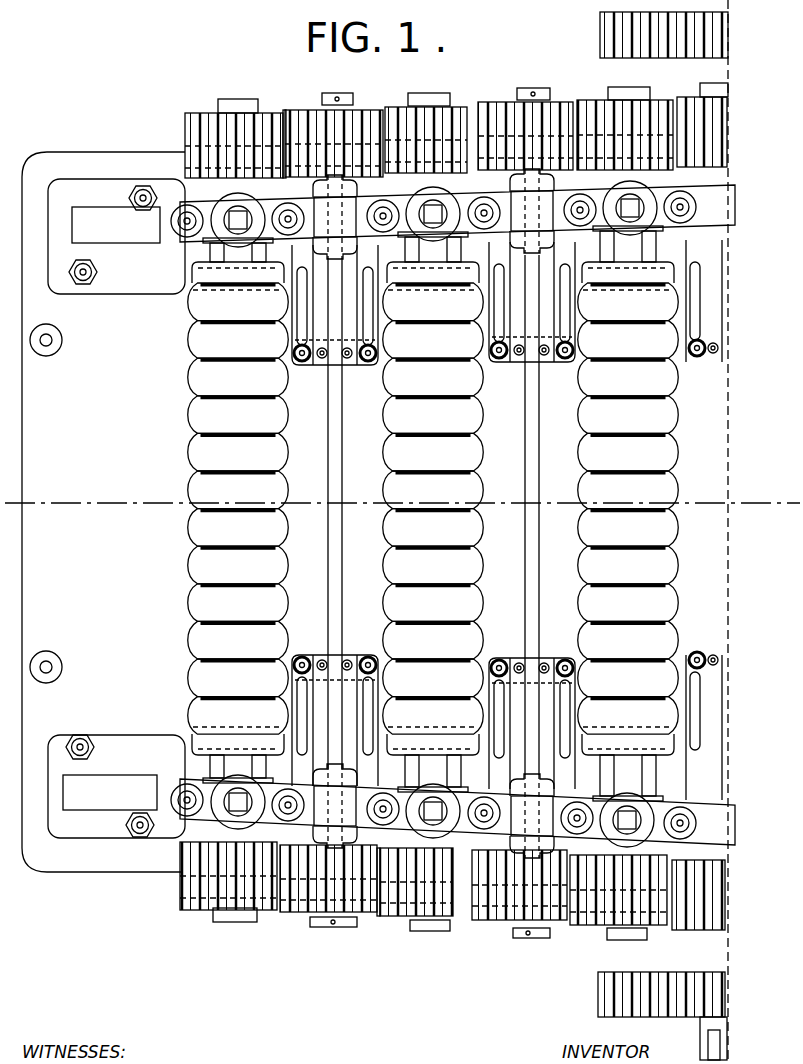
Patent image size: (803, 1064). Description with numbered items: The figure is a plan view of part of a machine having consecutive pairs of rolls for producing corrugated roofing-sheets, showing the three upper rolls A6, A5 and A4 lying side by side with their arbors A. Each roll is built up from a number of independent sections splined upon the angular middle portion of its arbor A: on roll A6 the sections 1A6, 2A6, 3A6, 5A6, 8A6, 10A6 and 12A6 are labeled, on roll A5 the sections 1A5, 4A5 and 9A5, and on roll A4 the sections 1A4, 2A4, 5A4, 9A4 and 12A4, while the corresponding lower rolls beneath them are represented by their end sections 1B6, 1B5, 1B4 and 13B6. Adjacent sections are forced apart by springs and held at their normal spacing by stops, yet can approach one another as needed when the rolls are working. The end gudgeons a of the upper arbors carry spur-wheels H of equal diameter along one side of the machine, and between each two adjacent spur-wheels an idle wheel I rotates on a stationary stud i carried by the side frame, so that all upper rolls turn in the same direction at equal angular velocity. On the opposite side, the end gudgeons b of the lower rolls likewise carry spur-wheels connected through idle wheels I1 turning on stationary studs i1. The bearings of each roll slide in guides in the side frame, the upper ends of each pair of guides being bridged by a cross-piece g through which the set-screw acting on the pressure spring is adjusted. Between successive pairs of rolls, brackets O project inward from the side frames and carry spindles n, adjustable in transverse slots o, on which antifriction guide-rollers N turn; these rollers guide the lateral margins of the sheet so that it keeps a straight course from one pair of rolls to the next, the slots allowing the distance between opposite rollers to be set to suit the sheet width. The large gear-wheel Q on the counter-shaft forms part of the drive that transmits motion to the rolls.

The spur-wheel H is at (185, 128).
The large gear-wheel Q is at (600, 22).
The end gudgeon a is at (222, 100).
The stationary stud i is at (340, 93).
The idle wheel I is at (290, 114).
The end gudgeon b is at (247, 917).
The stationary stud i1 is at (333, 927).
The idle wheel I1 is at (374, 916).
The cross-piece g is at (201, 212).
The upper roll A6 is at (221, 508).
The upper roll A5 is at (417, 508).
The upper roll A4 is at (610, 508).
The roll-section 1A6 is at (238, 302).
The roll-section 2A6 is at (238, 340).
The roll-section 3A6 is at (238, 377).
The roll-section 5A6 is at (238, 452).
The roll-section 8A6 is at (238, 565).
The roll-section 10A6 is at (238, 640).
The roll-section 12A6 is at (238, 716).
The roll-section 1A5 is at (433, 302).
The roll-section 4A5 is at (433, 415).
The roll-section 9A5 is at (433, 603).
The roll-section 1A4 is at (628, 302).
The roll-section 2A4 is at (628, 340).
The roll-section 5A4 is at (628, 452).
The roll-section 9A4 is at (628, 603).
The roll-section 12A4 is at (628, 716).
The roll-section 1B6 is at (193, 274).
The roll-section 1B5 is at (467, 273).
The roll-section 1B4 is at (660, 272).
The roll-section 13B6 is at (196, 750).
The roll-arbor A is at (258, 258).
The bracket O is at (563, 793).
The slot o is at (305, 303).
The spindle n is at (327, 347).
The antifriction-roller N is at (338, 370).